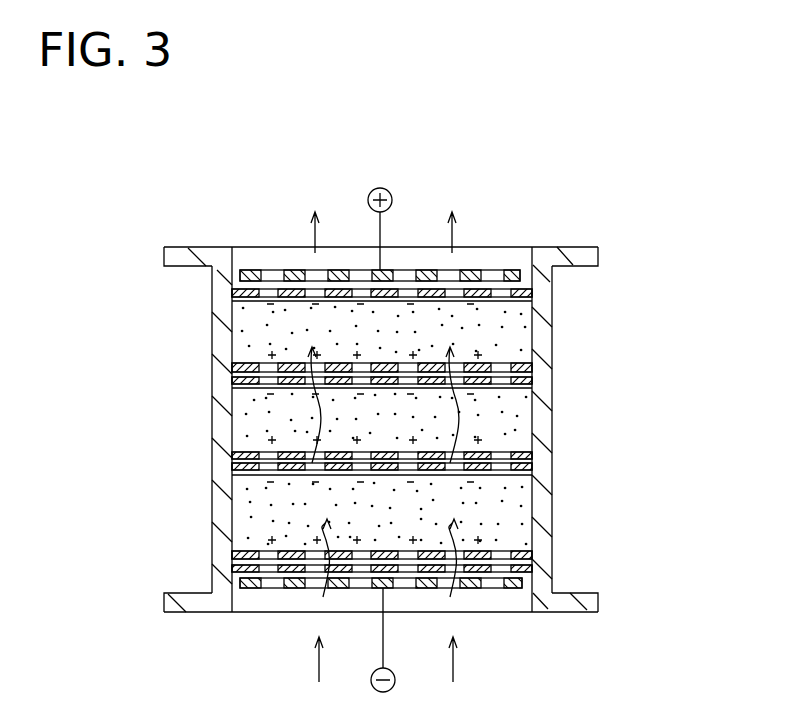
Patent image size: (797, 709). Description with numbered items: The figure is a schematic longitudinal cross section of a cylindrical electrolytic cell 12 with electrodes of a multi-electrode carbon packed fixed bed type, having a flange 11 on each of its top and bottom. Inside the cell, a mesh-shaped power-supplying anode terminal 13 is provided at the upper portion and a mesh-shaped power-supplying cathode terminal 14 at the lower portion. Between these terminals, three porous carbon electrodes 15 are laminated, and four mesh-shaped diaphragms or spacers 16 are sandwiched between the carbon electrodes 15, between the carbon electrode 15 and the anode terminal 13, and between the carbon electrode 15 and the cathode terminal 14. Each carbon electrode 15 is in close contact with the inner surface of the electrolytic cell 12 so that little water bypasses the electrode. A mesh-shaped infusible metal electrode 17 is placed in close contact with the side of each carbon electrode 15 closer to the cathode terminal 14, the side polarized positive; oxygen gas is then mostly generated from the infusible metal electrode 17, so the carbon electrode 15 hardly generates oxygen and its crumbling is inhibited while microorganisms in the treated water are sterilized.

The flange 11 is at (207, 257).
The electrolytic cell 12 is at (556, 422).
The power-supplying anode terminal 13 is at (508, 271).
The power-supplying cathode terminal 14 is at (497, 590).
The carbon electrode 15 is at (240, 485).
The diaphragm 16 is at (532, 380).
The infusible metal electrode 17 is at (489, 361).